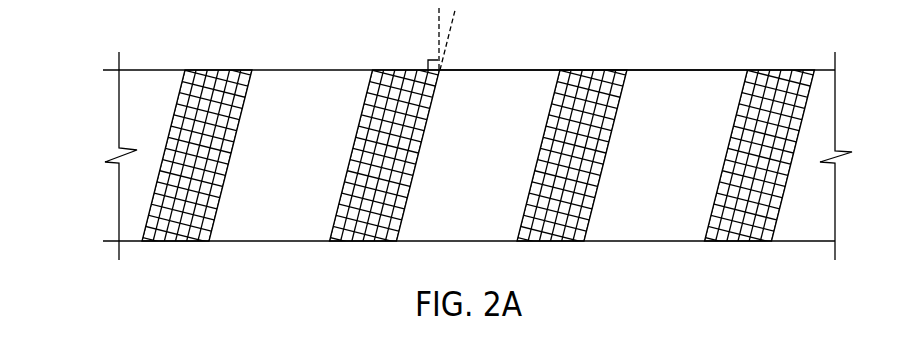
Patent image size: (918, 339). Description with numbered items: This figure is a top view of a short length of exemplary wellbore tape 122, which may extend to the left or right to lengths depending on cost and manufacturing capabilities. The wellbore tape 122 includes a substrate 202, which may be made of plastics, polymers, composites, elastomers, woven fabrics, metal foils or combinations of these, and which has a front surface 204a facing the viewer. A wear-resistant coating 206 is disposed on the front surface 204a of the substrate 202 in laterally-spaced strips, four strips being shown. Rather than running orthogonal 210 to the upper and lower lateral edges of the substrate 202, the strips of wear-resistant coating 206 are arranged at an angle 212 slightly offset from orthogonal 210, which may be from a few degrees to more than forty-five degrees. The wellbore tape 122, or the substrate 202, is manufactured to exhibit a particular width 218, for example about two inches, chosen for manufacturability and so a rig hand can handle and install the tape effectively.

The wellbore tape 122 is at (254, 24).
The substrate 202 is at (690, 70).
The front surface 204a is at (515, 73).
The wear-resistant coating 206 is at (356, 137).
The orthogonal 210 is at (438, 39).
The angle 212 is at (478, 28).
The width 218 is at (100, 70).